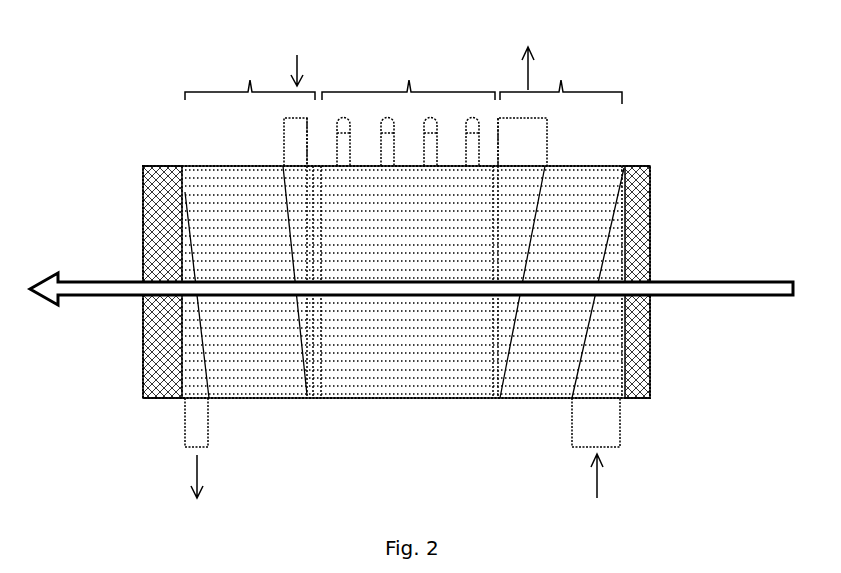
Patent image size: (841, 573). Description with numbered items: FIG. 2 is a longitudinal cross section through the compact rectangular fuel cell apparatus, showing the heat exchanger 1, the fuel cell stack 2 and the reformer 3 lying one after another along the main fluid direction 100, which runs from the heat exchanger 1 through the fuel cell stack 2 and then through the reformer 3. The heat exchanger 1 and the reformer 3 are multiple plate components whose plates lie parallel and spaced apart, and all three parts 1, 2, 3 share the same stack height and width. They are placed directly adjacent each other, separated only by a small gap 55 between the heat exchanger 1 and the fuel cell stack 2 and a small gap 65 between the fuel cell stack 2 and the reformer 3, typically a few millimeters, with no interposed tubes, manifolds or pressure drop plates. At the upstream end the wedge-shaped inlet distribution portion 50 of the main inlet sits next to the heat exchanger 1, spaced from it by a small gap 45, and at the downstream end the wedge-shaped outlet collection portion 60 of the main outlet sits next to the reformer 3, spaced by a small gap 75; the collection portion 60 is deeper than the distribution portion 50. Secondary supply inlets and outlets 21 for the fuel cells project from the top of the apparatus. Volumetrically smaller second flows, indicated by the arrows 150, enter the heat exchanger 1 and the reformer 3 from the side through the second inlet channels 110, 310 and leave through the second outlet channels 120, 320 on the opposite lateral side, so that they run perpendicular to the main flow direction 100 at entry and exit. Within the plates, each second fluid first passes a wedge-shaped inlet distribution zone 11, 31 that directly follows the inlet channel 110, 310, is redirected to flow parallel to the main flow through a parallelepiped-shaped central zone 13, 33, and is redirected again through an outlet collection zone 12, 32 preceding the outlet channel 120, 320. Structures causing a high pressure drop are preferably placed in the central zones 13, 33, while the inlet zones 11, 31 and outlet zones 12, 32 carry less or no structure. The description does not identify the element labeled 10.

The heat exchanger 1 is at (562, 226).
The fuel cell stack 2 is at (408, 77).
The reformer 3 is at (250, 224).
The housing 10 is at (596, 166).
The inlet distribution zone 11 is at (605, 352).
The outlet collection zone 12 is at (521, 190).
The central zone 13 is at (575, 247).
The secondary supply inlets and outlets 21 is at (387, 125).
The inlet distribution zone 31 is at (297, 190).
The outlet collection zone 32 is at (185, 362).
The central zone 33 is at (249, 335).
The gap 45 is at (630, 387).
The wedge-shaped inlet distribution portion 50 is at (641, 222).
The gap 55 is at (500, 398).
The wedge-shaped outlet collection portion 60 is at (160, 264).
The gap 65 is at (320, 360).
The gap 75 is at (172, 166).
The main fluid direction 100 is at (85, 290).
The second inlet channel 110 is at (603, 420).
The second outlet channel 120 is at (525, 125).
The arrows indicating second flows 150 is at (297, 55).
The second inlet channel 310 is at (292, 135).
The second outlet channel 320 is at (198, 428).